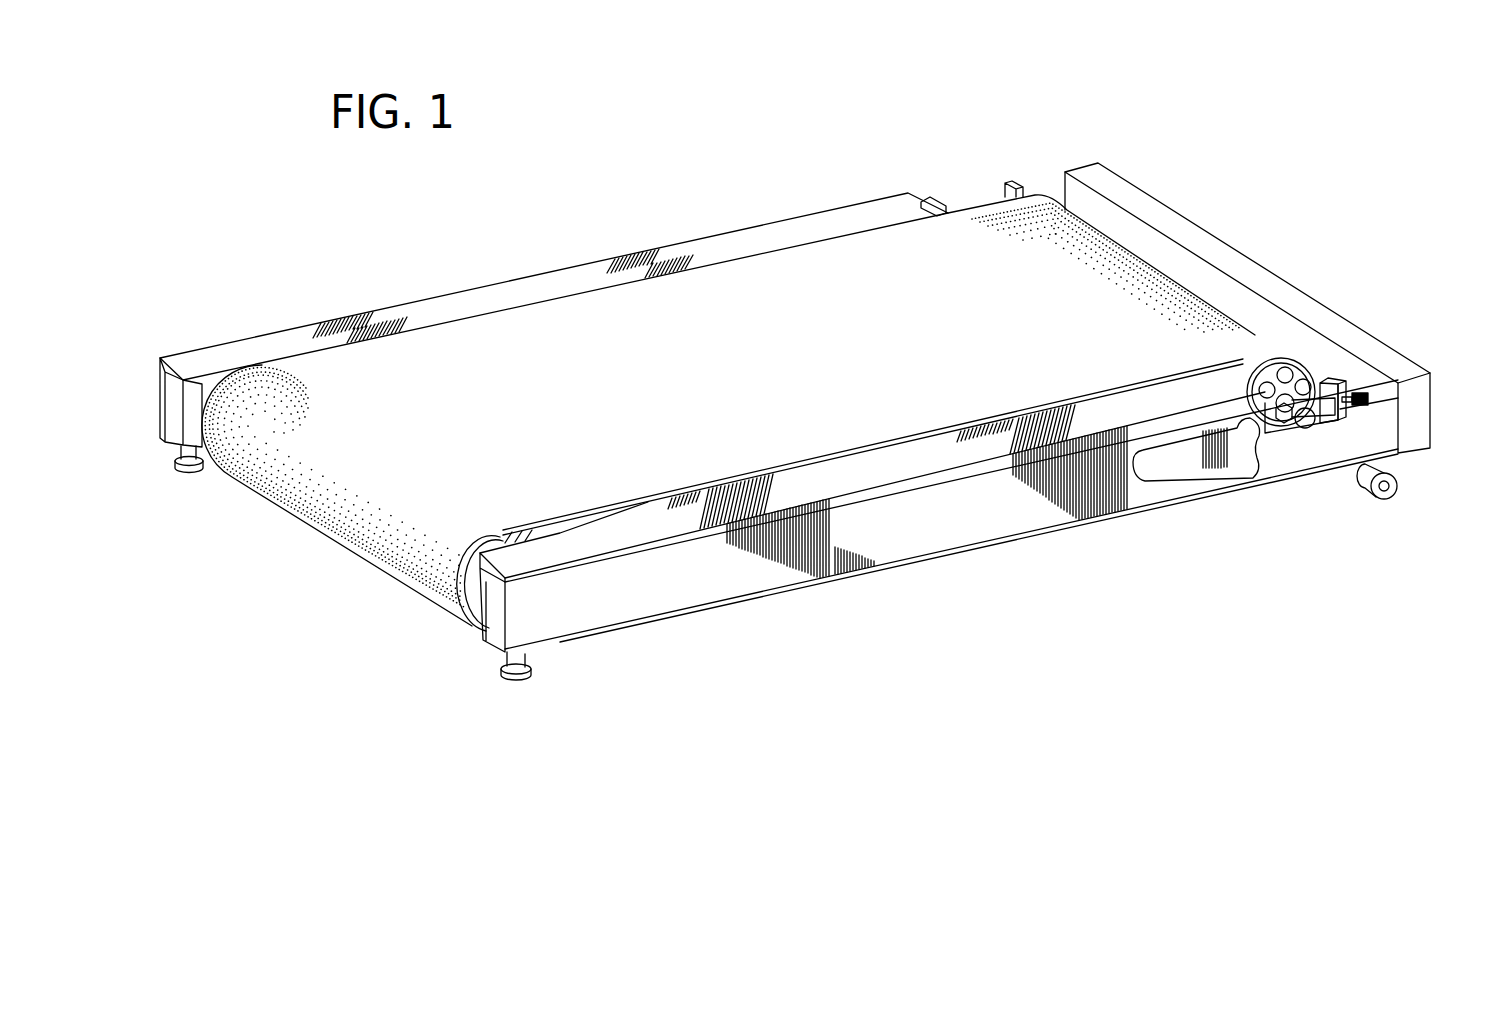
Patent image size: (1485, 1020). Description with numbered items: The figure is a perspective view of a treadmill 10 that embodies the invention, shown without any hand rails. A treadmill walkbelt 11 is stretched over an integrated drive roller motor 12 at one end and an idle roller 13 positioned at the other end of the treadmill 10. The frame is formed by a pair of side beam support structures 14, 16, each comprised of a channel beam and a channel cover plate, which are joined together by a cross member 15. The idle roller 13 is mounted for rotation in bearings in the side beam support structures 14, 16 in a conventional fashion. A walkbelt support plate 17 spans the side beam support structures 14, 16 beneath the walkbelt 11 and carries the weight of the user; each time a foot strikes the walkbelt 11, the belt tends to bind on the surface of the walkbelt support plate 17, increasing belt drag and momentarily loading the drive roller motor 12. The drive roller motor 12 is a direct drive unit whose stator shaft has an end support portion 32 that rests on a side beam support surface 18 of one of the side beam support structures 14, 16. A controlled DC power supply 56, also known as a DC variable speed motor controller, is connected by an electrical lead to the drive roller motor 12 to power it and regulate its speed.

The treadmill 10 is at (320, 268).
The treadmill walkbelt 11 is at (700, 396).
The integrated drive roller motor 12 is at (1305, 372).
The idle roller 13 is at (474, 613).
The side beam support structure 14 is at (716, 569).
The cross member 15 is at (1290, 302).
The side beam support structure 16 is at (868, 214).
The walkbelt support plate 17 is at (648, 525).
The side beam support surface 18 is at (1282, 426).
The stator shaft end support portion 32 is at (1305, 422).
The controlled DC power supply 56 is at (1192, 458).